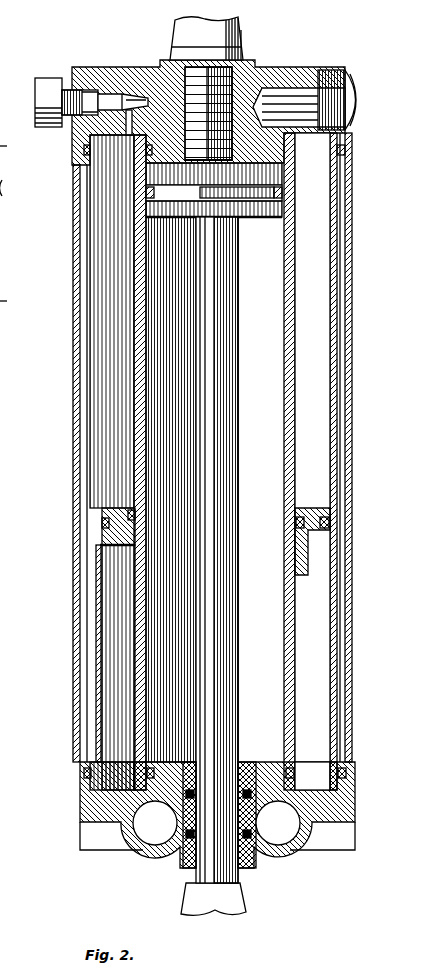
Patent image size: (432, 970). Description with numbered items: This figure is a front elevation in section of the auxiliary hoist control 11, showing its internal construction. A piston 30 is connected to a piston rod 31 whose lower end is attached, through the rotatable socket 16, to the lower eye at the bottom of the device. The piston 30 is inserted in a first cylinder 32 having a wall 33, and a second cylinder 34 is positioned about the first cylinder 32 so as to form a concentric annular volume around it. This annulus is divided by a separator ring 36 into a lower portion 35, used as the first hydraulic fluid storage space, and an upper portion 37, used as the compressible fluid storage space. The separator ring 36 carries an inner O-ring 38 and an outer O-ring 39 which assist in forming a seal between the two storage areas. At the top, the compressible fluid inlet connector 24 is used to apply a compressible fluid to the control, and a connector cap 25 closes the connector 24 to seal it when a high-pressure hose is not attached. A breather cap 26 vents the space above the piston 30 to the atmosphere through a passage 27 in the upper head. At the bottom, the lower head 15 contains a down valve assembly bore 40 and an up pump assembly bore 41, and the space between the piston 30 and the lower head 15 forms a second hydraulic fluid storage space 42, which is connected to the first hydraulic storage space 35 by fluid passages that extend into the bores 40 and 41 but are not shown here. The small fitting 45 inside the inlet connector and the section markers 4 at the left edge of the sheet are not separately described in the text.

The auxiliary hoist control 11 is at (378, 343).
The lower head 15 is at (82, 820).
The rotatable socket 16 is at (247, 893).
The compressible fluid inlet connector 24 is at (66, 90).
The connector cap 25 is at (46, 78).
The breather cap 26 is at (11, 190).
The passage 27 is at (258, 125).
The piston 30 is at (283, 206).
The piston rod 31 is at (237, 278).
The first cylinder 32 is at (296, 381).
The wall 33 is at (136, 686).
The second cylinder 34 is at (98, 639).
The lower portion 35 is at (318, 638).
The separator ring 36 is at (328, 553).
The upper portion 37 is at (312, 435).
The inner O-ring 38 is at (320, 516).
The outer O-ring 39 is at (325, 527).
The down valve assembly bore 40 is at (298, 845).
The up pump assembly bore 41 is at (157, 833).
The second hydraulic fluid storage space 42 is at (268, 628).
The valve nozzle 45 is at (84, 105).
The section line 4 is at (8, 222).